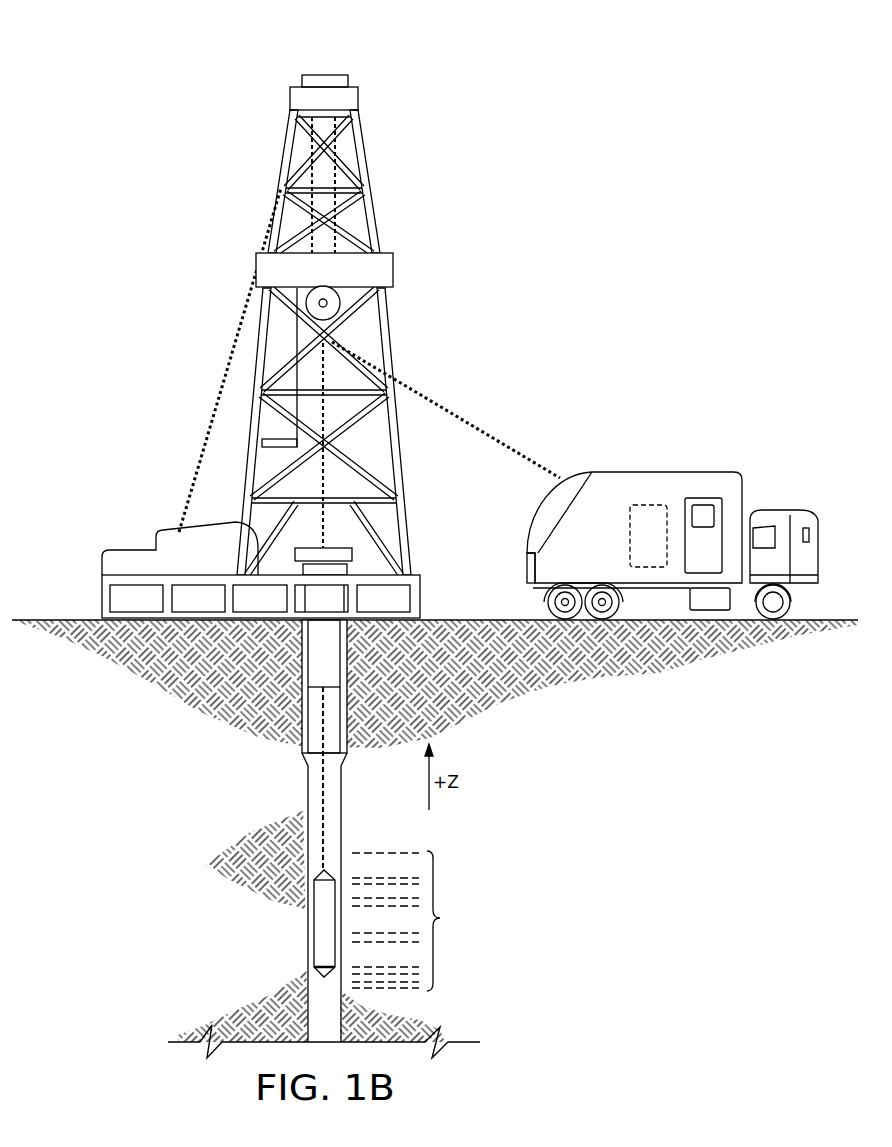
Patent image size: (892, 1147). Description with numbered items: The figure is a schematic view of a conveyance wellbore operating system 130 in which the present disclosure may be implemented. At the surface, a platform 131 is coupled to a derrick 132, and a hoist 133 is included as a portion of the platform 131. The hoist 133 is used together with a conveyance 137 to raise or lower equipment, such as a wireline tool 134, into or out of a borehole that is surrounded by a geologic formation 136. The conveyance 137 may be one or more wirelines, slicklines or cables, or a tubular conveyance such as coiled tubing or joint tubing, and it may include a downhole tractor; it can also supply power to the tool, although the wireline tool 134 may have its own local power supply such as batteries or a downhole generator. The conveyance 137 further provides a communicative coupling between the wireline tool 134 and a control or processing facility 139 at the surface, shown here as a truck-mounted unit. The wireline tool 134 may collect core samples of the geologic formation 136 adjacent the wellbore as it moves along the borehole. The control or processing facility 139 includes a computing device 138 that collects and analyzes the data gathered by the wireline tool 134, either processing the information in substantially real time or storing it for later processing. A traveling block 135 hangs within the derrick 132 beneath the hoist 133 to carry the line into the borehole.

The conveyance wellbore operating system 130 is at (214, 58).
The platform 131 is at (421, 600).
The derrick 132 is at (413, 532).
The hoist 133 is at (318, 316).
The wireline tool 134 is at (315, 925).
The traveling block 135 is at (306, 548).
The geologic formation 136 is at (417, 921).
The conveyance 137 is at (455, 408).
The computing device 138 is at (648, 505).
The control or processing facility 139 is at (704, 498).